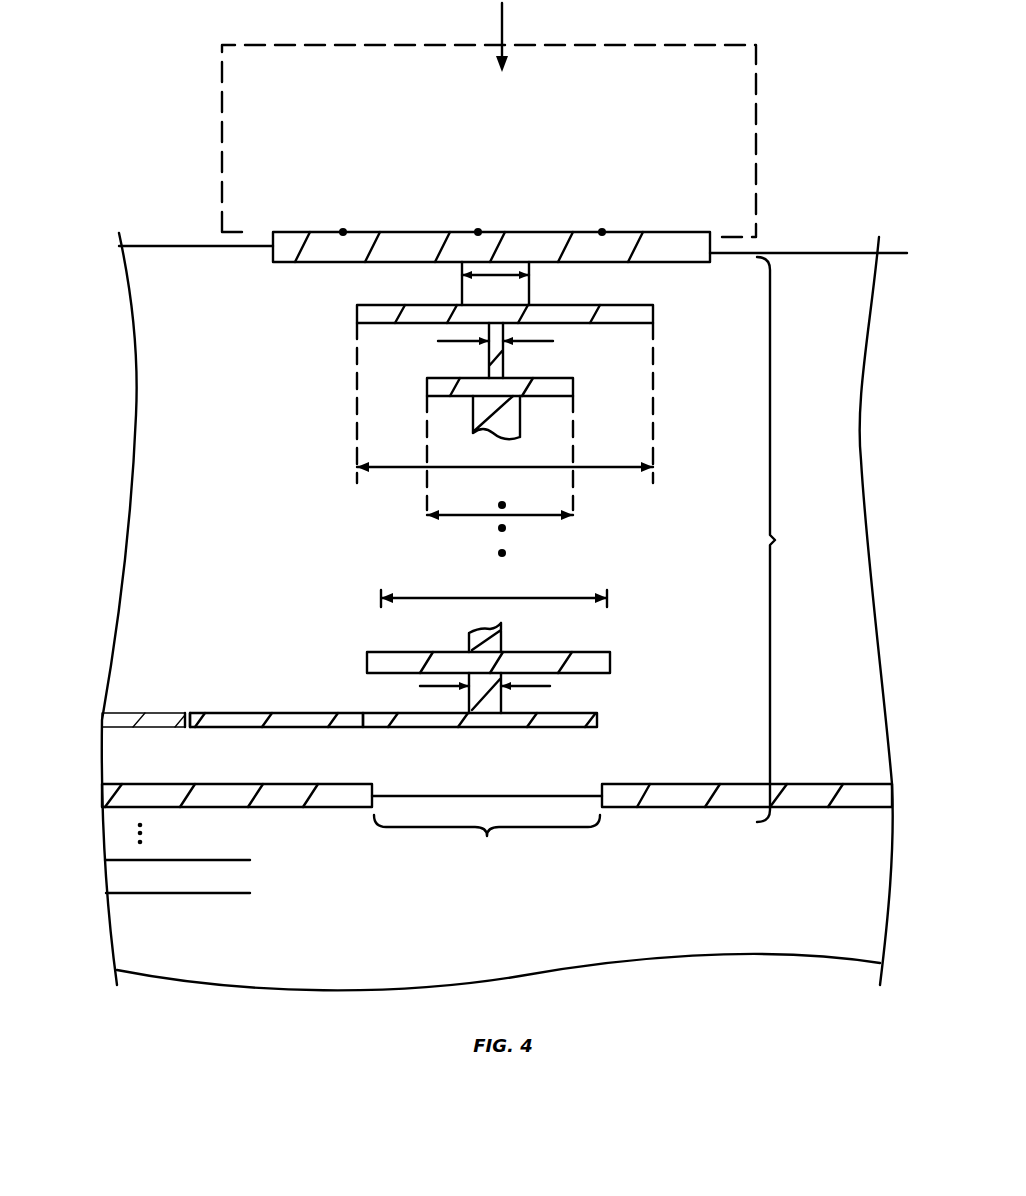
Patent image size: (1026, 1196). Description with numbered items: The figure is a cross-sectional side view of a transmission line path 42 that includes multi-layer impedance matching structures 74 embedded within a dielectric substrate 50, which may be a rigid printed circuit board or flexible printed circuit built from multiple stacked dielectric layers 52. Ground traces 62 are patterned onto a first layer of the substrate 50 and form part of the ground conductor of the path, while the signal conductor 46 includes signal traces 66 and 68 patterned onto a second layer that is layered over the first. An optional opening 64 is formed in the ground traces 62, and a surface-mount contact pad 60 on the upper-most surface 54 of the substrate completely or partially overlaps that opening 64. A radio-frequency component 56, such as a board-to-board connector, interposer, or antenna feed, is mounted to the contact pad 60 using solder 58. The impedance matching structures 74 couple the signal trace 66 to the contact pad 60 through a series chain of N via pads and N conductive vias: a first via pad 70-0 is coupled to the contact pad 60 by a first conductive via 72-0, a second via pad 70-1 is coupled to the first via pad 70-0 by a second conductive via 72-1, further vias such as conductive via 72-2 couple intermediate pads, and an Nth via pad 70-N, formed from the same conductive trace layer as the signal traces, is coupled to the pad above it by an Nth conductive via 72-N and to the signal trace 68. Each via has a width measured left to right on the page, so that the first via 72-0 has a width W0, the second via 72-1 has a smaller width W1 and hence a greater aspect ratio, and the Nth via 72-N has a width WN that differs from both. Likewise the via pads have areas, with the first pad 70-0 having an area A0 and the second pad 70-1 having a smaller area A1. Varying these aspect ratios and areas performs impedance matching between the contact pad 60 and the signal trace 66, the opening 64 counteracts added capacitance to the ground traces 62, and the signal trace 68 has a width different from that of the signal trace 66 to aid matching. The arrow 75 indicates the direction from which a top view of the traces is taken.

The transmission line path 42 is at (105, 470).
The signal conductor 46 is at (185, 690).
The substrate 50 is at (829, 260).
The dielectric layers 52 is at (120, 928).
The upper-most surface 54 is at (150, 243).
The radio-frequency component 56 is at (756, 117).
The solder 58 is at (343, 232).
The contact pad 60 is at (411, 240).
The ground traces 62 is at (296, 800).
The opening 64 is at (487, 833).
The signal trace 66 is at (180, 720).
The signal trace 68 is at (312, 722).
The first via pad 70-0 is at (653, 312).
The second via pad 70-1 is at (573, 388).
The Nth via pad 70-N is at (597, 720).
The first conductive via 72-0 is at (529, 283).
The second conductive via 72-1 is at (503, 357).
The conductive via 72-2 is at (520, 414).
The Nth conductive via 72-N is at (505, 702).
The multi-layer impedance matching structures 74 is at (779, 539).
The arrow 75 is at (502, 18).
The first width W0 is at (495, 275).
The second width W1 is at (463, 341).
The Nth width WN is at (440, 680).
The first area A0 is at (396, 470).
The second area A1 is at (522, 516).